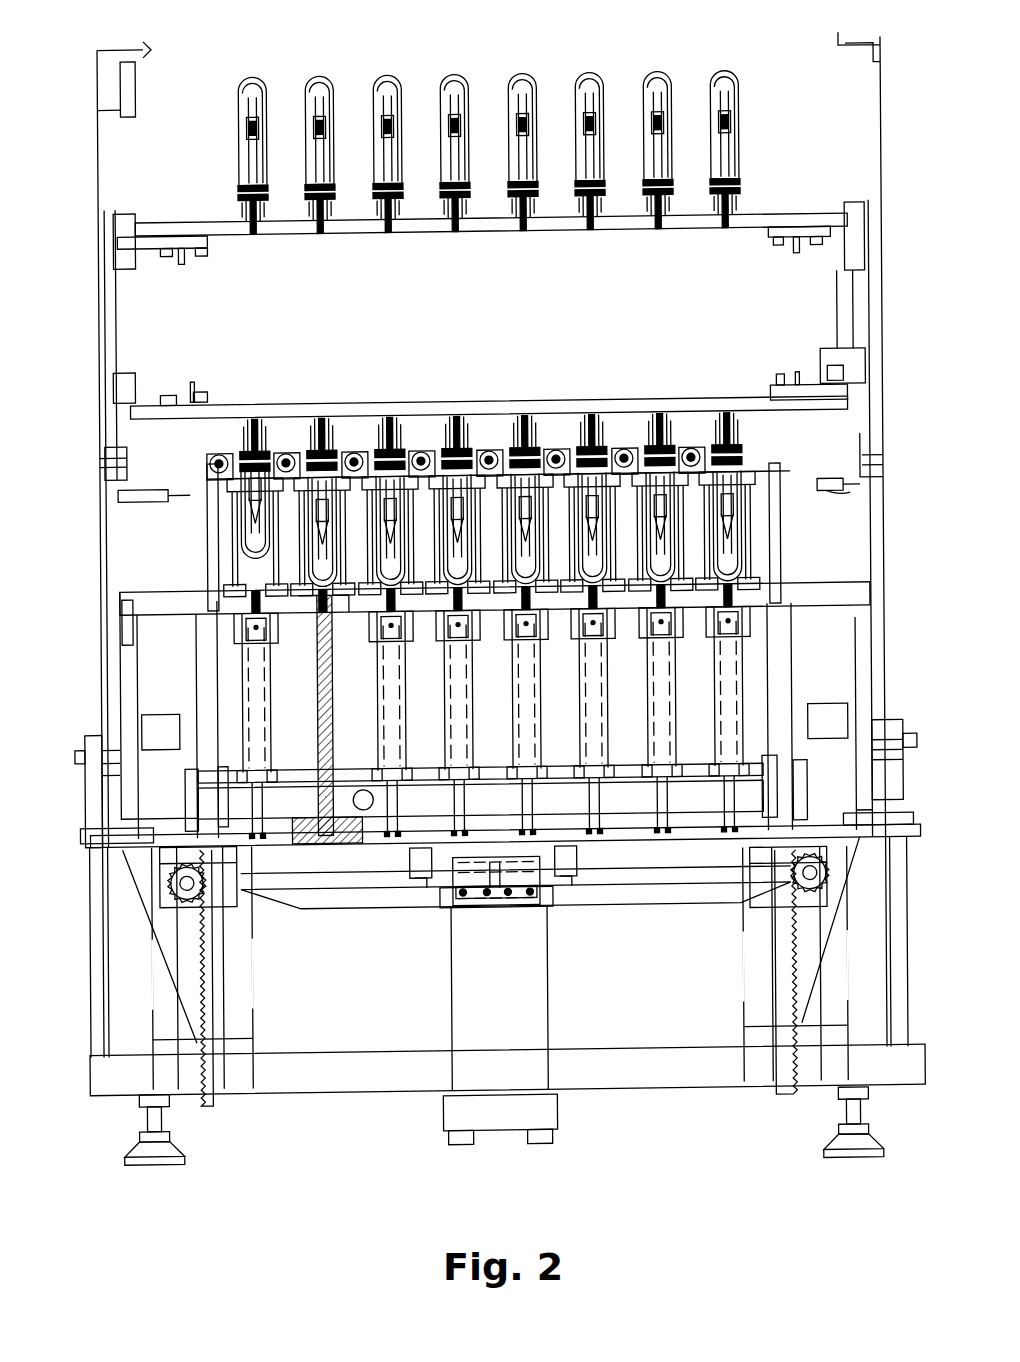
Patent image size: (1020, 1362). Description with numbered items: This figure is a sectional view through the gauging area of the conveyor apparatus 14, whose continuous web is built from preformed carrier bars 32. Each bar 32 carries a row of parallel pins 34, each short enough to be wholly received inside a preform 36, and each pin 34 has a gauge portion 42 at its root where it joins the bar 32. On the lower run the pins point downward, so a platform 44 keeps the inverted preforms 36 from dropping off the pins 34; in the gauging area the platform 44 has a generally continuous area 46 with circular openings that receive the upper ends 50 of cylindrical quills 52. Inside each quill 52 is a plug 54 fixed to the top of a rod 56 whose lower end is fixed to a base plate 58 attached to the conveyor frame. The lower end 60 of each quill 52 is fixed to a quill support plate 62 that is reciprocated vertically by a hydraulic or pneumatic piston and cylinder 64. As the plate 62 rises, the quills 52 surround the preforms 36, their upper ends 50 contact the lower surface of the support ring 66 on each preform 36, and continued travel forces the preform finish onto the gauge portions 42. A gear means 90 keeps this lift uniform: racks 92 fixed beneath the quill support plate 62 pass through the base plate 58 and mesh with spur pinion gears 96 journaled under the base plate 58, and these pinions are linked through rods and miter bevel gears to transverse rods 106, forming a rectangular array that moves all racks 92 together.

The conveyor apparatus 14 is at (877, 571).
The carrier bar 32 is at (688, 236).
The pin 34 is at (400, 110).
The preform 36 is at (262, 104).
The gauge portion 42 is at (468, 427).
The platform 44 is at (168, 630).
The continuous area 46 is at (800, 600).
The upper end of quill 50 is at (330, 462).
The quill 52 is at (244, 570).
The plug 54 is at (770, 598).
The rod 56 is at (329, 648).
The base plate 58 is at (367, 851).
The lower end of quill 60 is at (340, 772).
The quill support plate 62 is at (753, 802).
The piston and cylinder 64 is at (506, 1018).
The support ring 66 is at (238, 197).
The gear means 90 is at (265, 980).
The rack 92 is at (206, 1020).
The spur pinion gear 96 is at (146, 892).
The transverse rod 106 is at (581, 887).